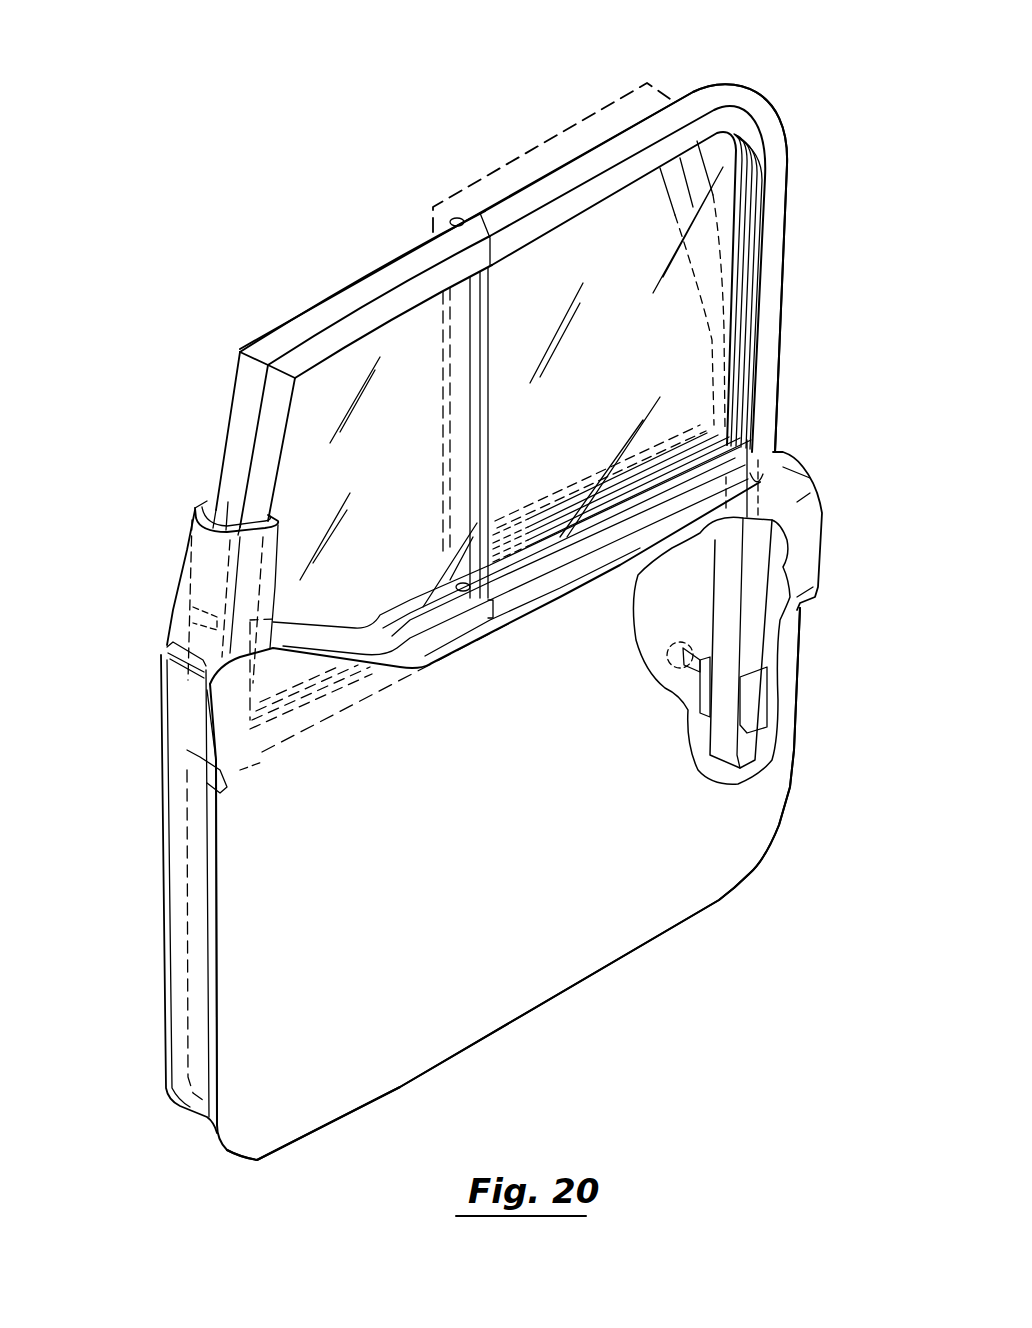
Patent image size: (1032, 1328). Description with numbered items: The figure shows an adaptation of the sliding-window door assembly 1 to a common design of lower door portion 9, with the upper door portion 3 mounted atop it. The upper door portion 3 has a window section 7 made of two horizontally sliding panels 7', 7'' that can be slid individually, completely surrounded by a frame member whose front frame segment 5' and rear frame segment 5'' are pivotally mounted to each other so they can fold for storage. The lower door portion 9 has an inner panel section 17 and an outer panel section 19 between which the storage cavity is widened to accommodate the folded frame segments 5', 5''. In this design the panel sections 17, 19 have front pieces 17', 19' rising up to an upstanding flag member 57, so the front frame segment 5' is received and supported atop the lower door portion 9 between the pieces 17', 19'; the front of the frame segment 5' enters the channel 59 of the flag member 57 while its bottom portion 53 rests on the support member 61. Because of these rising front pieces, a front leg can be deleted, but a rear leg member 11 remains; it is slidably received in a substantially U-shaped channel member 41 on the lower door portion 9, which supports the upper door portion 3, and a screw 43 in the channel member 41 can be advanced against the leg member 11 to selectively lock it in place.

The door assembly 1 is at (212, 272).
The upper door portion 3 is at (202, 370).
The front frame segment 5' is at (456, 204).
The rear frame segment 5'' is at (636, 231).
The window section 7 is at (643, 374).
The first sliding panel 7' is at (349, 468).
The second sliding panel 7'' is at (626, 352).
The lower door portion 9 is at (492, 843).
The leg member 11 is at (753, 632).
The inner panel section 17 is at (141, 894).
The front piece of inner panel section 17' is at (509, 541).
The outer panel section 19 is at (142, 907).
The front piece of outer panel section 19' is at (515, 567).
The U-shaped channel member 41 is at (757, 692).
The screw 43 is at (683, 670).
The bottom portion of frame segment 53 is at (300, 727).
The flag member 57 is at (182, 587).
The channel 59 is at (228, 495).
The support member 61 is at (190, 760).